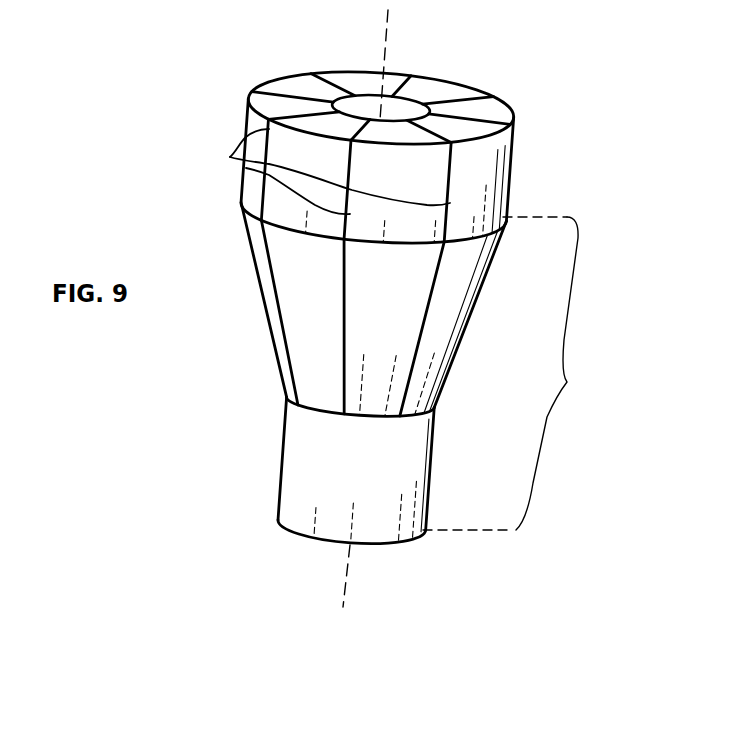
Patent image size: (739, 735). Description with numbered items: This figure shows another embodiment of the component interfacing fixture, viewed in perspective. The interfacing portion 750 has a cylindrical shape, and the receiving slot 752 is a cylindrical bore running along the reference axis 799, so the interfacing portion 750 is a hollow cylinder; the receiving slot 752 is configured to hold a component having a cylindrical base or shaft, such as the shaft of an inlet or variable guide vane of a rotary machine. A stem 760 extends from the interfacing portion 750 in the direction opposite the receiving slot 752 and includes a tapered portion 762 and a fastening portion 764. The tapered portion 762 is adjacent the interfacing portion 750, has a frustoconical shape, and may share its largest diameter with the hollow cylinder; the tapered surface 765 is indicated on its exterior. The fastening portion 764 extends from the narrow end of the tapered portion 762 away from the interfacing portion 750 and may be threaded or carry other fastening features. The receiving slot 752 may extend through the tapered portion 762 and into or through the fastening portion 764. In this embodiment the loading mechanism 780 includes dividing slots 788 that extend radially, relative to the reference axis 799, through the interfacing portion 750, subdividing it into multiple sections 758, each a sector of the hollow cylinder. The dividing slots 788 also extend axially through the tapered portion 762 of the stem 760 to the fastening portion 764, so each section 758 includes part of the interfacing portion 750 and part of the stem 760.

The interfacing portion 750 is at (493, 167).
The receiving slot 752 is at (363, 103).
The sections 758 is at (502, 112).
The stem 760 is at (519, 373).
The tapered portion 762 is at (293, 338).
The fastening portion 764 is at (292, 478).
The tapered surface 765 is at (456, 366).
The loading mechanism 780 is at (230, 157).
The dividing slots 788 is at (267, 263).
The reference axis 799 is at (388, 28).